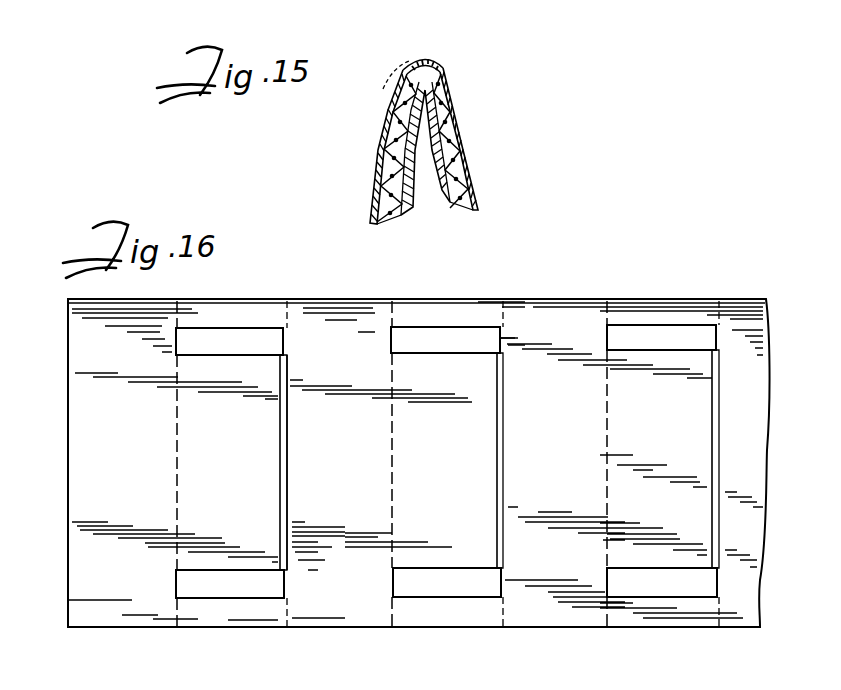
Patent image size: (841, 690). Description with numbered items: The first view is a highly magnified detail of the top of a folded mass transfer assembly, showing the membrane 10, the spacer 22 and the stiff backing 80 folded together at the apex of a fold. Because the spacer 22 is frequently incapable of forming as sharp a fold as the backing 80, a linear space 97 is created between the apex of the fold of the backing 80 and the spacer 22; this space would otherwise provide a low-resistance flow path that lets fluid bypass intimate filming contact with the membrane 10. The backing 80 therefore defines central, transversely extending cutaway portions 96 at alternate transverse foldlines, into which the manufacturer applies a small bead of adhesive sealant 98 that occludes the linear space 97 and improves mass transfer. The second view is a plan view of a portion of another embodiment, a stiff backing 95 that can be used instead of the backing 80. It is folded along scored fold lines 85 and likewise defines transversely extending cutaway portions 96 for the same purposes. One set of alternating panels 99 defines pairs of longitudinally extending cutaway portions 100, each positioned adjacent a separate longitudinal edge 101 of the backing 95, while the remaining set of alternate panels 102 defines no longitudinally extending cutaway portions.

In FIG. 15, the membrane 10 is at (407, 208).
In FIG. 15, the spacer 22 is at (375, 176).
In FIG. 15, the backing 80 is at (380, 143).
In FIG. 15, the linear space 97 is at (384, 79).
In FIG. 15, the adhesive sealant 98 is at (425, 61).
In FIG. 16, the stiff backing 95 is at (80, 505).
In FIG. 16, the scored fold lines 85 is at (177, 415).
In FIG. 16, the longitudinally extending cutaway portions 100 is at (208, 338).
In FIG. 16, the longitudinal edge 101 is at (338, 298).
In FIG. 16, the alternating panels 99 is at (467, 460).
In FIG. 16, the cutaway portions 96 is at (283, 493).
In FIG. 16, the alternate panels 102 is at (337, 472).